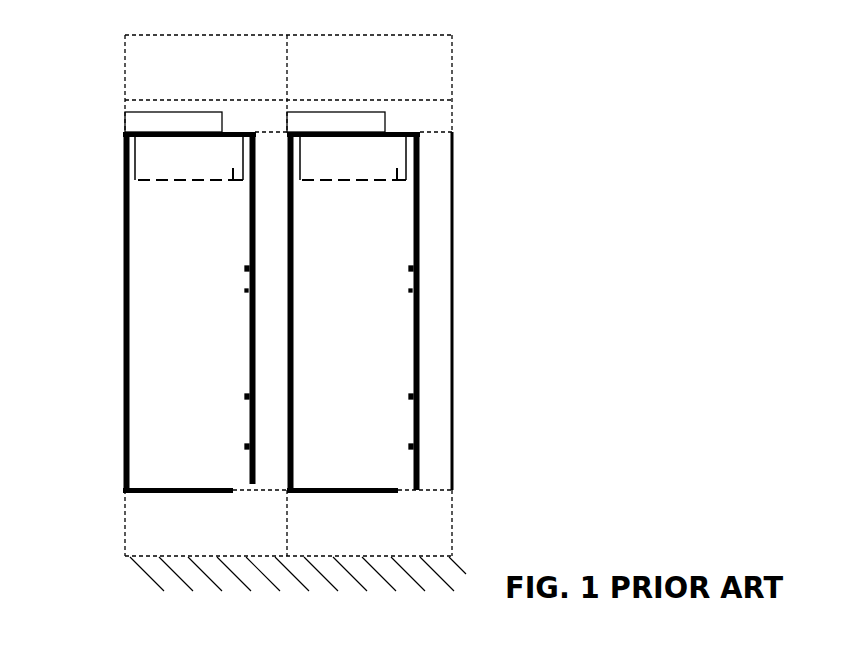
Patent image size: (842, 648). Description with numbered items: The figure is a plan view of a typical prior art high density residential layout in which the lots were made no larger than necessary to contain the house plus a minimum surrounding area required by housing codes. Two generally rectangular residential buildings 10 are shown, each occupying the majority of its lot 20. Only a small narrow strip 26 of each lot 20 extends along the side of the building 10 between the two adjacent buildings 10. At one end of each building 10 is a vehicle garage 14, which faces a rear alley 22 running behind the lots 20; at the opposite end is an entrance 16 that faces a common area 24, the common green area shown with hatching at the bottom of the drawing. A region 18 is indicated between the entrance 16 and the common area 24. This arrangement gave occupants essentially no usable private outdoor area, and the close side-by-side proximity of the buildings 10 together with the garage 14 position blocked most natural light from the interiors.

The residential building 10 is at (287, 301).
The vehicle garage 14 is at (270, 158).
The entrance 16 is at (245, 490).
The bottom gap between cell and base 18 is at (177, 522).
The lot 20 is at (120, 330).
The rear alley 22 is at (267, 75).
The common area 24 is at (152, 574).
The narrow strip 26 is at (270, 308).